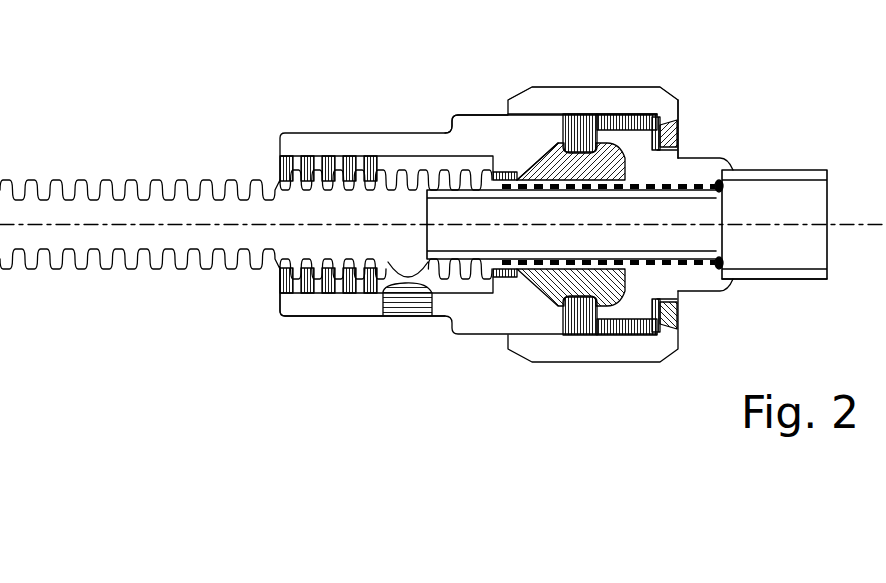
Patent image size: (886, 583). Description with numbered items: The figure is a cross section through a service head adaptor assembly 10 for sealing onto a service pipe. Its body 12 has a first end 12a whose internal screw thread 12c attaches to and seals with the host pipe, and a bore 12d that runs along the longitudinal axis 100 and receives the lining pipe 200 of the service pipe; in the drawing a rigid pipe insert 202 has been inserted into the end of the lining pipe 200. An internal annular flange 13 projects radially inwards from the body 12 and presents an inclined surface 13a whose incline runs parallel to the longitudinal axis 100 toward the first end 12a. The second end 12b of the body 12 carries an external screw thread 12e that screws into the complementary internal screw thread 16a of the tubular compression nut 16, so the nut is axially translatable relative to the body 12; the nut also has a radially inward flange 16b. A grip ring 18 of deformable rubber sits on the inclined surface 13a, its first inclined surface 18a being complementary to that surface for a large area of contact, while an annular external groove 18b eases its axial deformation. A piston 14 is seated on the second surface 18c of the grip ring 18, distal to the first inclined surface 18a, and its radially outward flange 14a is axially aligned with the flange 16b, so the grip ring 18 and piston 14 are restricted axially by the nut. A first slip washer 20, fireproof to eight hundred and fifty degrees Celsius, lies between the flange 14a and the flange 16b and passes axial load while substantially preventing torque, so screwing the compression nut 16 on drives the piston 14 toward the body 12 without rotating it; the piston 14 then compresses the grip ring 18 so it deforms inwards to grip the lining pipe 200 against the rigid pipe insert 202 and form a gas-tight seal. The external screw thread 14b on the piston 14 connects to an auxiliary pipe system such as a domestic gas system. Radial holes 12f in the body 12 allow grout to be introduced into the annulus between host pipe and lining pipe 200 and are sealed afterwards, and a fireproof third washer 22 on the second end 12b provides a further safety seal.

The service head adaptor assembly 10 is at (756, 87).
The body 12 is at (347, 132).
The first end 12a is at (277, 288).
The second end 12b is at (565, 118).
The internal screw thread 12c is at (280, 168).
The bore 12d is at (380, 278).
The external screw thread 12e is at (457, 114).
The radial holes 12f is at (413, 314).
The internal annular flange 13 is at (505, 177).
The inclined surface 13a is at (505, 272).
The piston 14 is at (703, 290).
The flange 14a is at (633, 315).
The external screw thread 14b is at (807, 282).
The compression nut 16 is at (613, 93).
The internal screw thread 16a is at (597, 120).
The flange 16b is at (668, 320).
The grip ring 18 is at (588, 322).
The first inclined surface 18a is at (553, 312).
The annular external groove 18b is at (578, 125).
The second surface 18c is at (653, 135).
The first slip washer 20 is at (679, 118).
The third washer 22 is at (557, 142).
The longitudinal axis 100 is at (842, 222).
The lining pipe 200 is at (147, 200).
The rigid pipe insert 202 is at (718, 183).